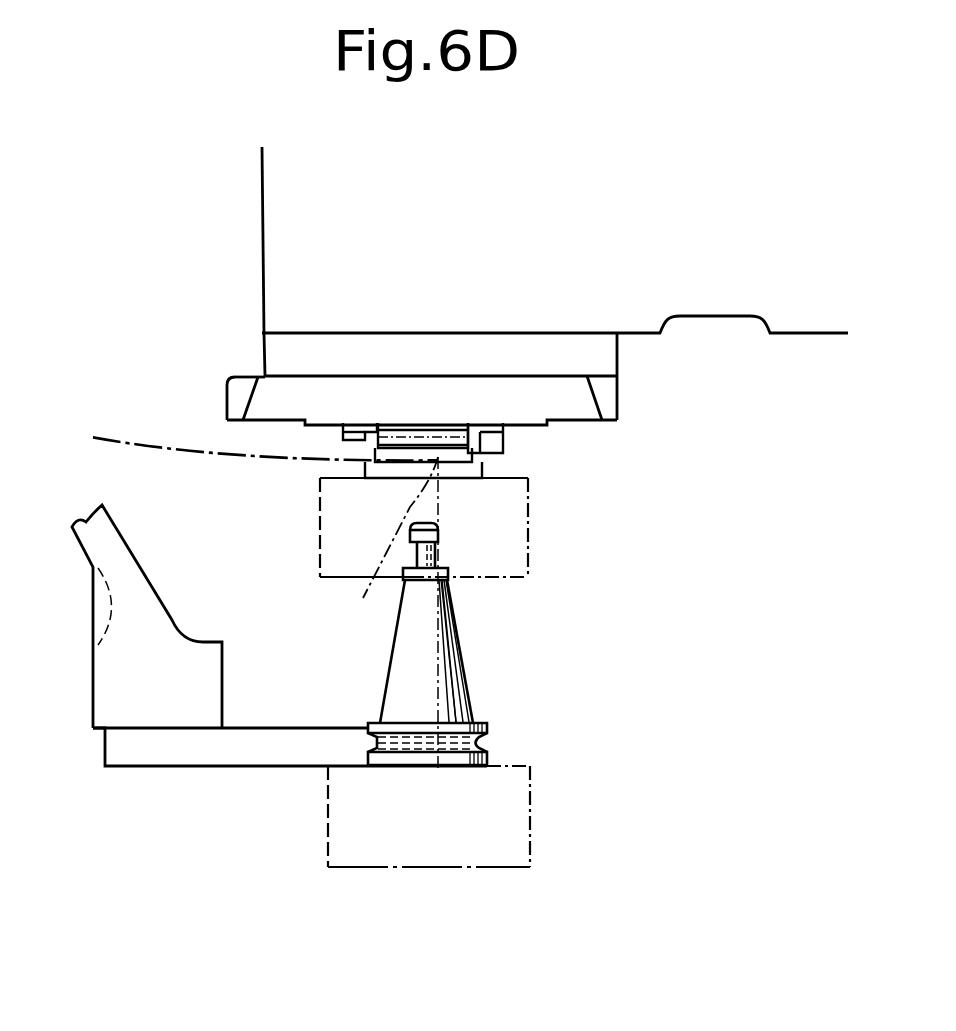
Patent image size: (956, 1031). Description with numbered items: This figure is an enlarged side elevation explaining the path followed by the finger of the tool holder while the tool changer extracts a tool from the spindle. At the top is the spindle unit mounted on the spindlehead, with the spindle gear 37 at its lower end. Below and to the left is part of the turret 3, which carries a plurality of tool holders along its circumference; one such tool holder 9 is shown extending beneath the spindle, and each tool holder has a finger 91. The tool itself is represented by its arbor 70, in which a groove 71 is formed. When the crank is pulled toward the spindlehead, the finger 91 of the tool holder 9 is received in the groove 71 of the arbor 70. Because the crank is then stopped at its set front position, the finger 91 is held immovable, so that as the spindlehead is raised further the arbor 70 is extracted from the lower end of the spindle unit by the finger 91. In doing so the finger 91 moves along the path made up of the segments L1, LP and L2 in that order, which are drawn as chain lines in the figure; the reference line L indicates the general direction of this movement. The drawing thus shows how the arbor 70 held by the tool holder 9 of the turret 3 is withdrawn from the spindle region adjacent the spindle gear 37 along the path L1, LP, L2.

The spindle gear 37 is at (618, 400).
The turret 3 is at (108, 695).
The tool holder 9 is at (241, 757).
The arbor 70 is at (462, 664).
The groove 71 is at (493, 742).
The finger 91 is at (477, 721).
The reference line L is at (163, 432).
The path L1 is at (243, 462).
The path L2 is at (452, 611).
The path Lp LP is at (387, 539).